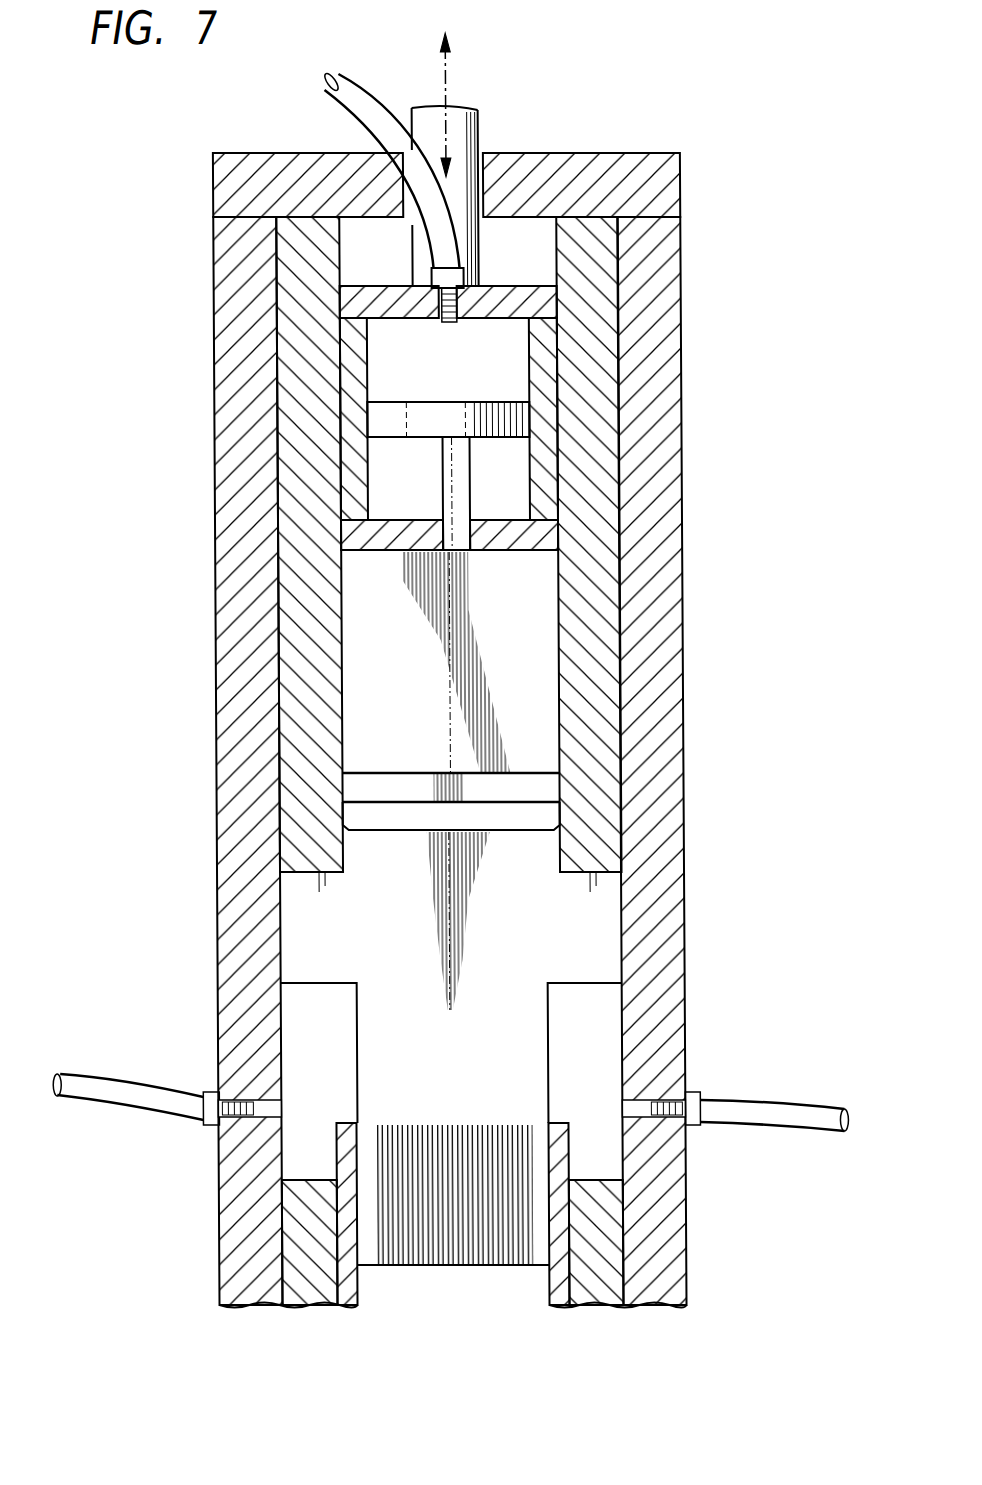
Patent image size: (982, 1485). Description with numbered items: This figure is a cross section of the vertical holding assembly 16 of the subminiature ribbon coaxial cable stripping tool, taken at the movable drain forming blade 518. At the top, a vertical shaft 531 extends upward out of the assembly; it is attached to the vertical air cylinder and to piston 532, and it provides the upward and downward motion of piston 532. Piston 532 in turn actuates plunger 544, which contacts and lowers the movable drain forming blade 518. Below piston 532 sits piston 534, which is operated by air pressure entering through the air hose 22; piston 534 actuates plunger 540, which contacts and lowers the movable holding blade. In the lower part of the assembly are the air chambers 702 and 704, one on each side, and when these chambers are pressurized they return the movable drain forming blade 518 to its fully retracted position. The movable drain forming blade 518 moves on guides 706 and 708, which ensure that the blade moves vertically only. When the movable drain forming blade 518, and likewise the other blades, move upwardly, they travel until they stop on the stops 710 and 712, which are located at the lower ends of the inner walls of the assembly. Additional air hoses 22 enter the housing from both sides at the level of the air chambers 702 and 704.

The vertical holding assembly 16 is at (680, 651).
The air hose 22 is at (356, 90).
The vertical shaft 531 is at (479, 137).
The piston 532 is at (526, 302).
The piston 534 is at (418, 402).
The plunger 544 is at (416, 672).
The plunger 540 is at (522, 800).
The movable drain forming blade 518 is at (417, 932).
The stop 712 is at (308, 868).
The stop 710 is at (593, 870).
The air chamber 704 is at (311, 1032).
The air chamber 702 is at (577, 1036).
The guide 708 is at (339, 1310).
The guide 706 is at (553, 1310).